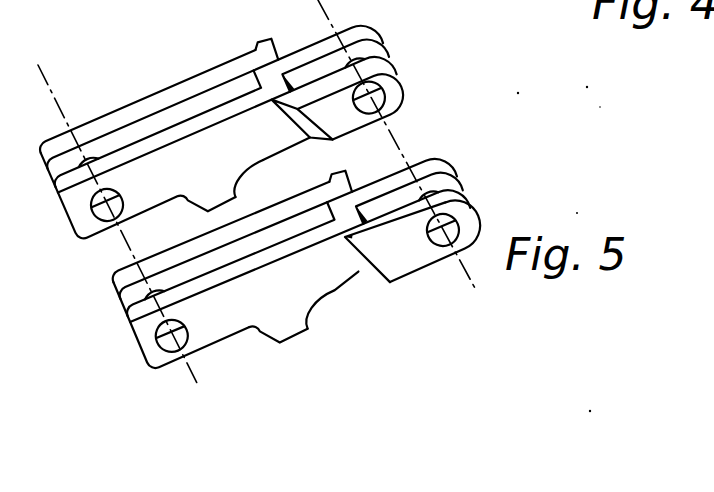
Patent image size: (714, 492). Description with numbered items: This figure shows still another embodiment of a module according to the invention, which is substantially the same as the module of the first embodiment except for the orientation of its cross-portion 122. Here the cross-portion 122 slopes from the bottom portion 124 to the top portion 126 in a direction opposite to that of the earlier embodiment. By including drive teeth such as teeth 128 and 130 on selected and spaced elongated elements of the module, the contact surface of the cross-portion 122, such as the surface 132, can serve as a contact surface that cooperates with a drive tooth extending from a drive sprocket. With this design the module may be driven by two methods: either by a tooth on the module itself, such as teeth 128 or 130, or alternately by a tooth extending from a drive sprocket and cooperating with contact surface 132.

The cross-portion 122 is at (261, 56).
The bottom portion 124 is at (340, 138).
The top portion 126 is at (188, 88).
The drive tooth 128 is at (232, 190).
The drive tooth 130 is at (286, 326).
The contact surface 132 is at (354, 282).